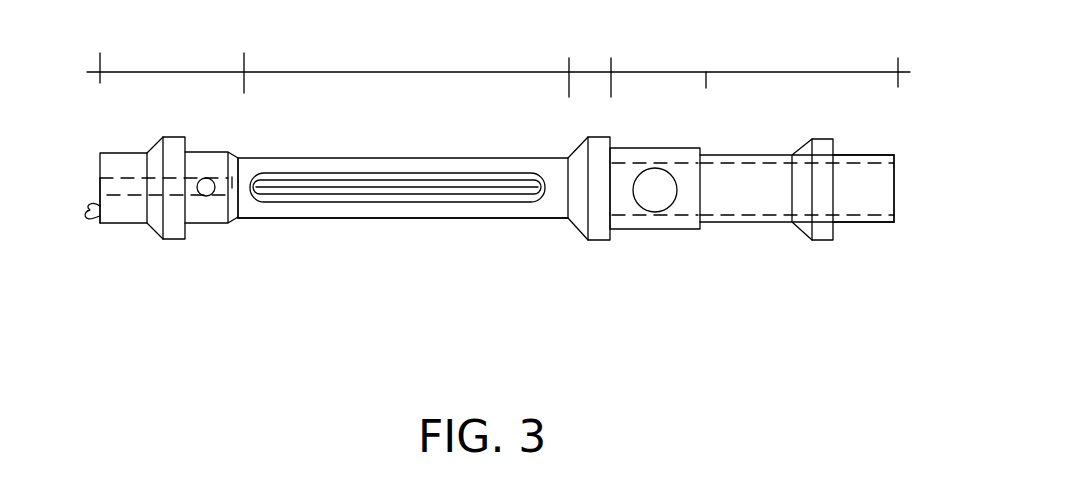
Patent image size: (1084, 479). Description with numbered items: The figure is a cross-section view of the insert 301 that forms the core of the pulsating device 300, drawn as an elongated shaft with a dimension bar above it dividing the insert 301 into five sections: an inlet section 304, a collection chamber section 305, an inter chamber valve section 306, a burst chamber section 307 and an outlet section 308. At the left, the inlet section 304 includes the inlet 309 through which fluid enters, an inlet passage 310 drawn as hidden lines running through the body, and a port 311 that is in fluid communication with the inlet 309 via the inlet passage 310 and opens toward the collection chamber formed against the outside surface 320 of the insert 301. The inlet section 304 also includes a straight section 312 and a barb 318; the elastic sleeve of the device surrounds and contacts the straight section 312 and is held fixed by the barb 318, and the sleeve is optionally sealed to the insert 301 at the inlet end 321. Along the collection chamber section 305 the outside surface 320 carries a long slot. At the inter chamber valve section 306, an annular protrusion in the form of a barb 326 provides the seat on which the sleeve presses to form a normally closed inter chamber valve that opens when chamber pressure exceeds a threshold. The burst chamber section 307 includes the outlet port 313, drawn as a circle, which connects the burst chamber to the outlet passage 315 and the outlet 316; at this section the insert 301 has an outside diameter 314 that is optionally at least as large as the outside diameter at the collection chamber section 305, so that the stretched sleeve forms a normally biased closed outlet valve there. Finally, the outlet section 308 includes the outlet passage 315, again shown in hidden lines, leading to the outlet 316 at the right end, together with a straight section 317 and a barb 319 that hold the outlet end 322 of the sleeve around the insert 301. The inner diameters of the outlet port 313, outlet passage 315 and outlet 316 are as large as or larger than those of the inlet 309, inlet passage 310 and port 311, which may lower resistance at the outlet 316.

The pulsating device 300 is at (298, 210).
The insert 301 is at (505, 205).
The inlet section 304 is at (165, 135).
The collection chamber section 305 is at (403, 124).
The inter chamber valve section 306 is at (590, 135).
The burst chamber section 307 is at (658, 130).
The outlet section 308 is at (805, 135).
The inlet 309 is at (100, 178).
The inlet passage 310 is at (130, 187).
The port 311 is at (206, 195).
The straight section 312 is at (127, 152).
The outlet port 313 is at (660, 194).
The outside diameter 314 is at (698, 231).
The outlet passage 315 is at (780, 208).
The outlet 316 is at (907, 193).
The straight section 317 is at (870, 224).
The barb 318 is at (175, 136).
The barb 319 is at (824, 138).
The outside surface 320 is at (393, 219).
The inlet end 321 is at (95, 227).
The outlet end 322 is at (894, 178).
The barb 326 is at (602, 242).